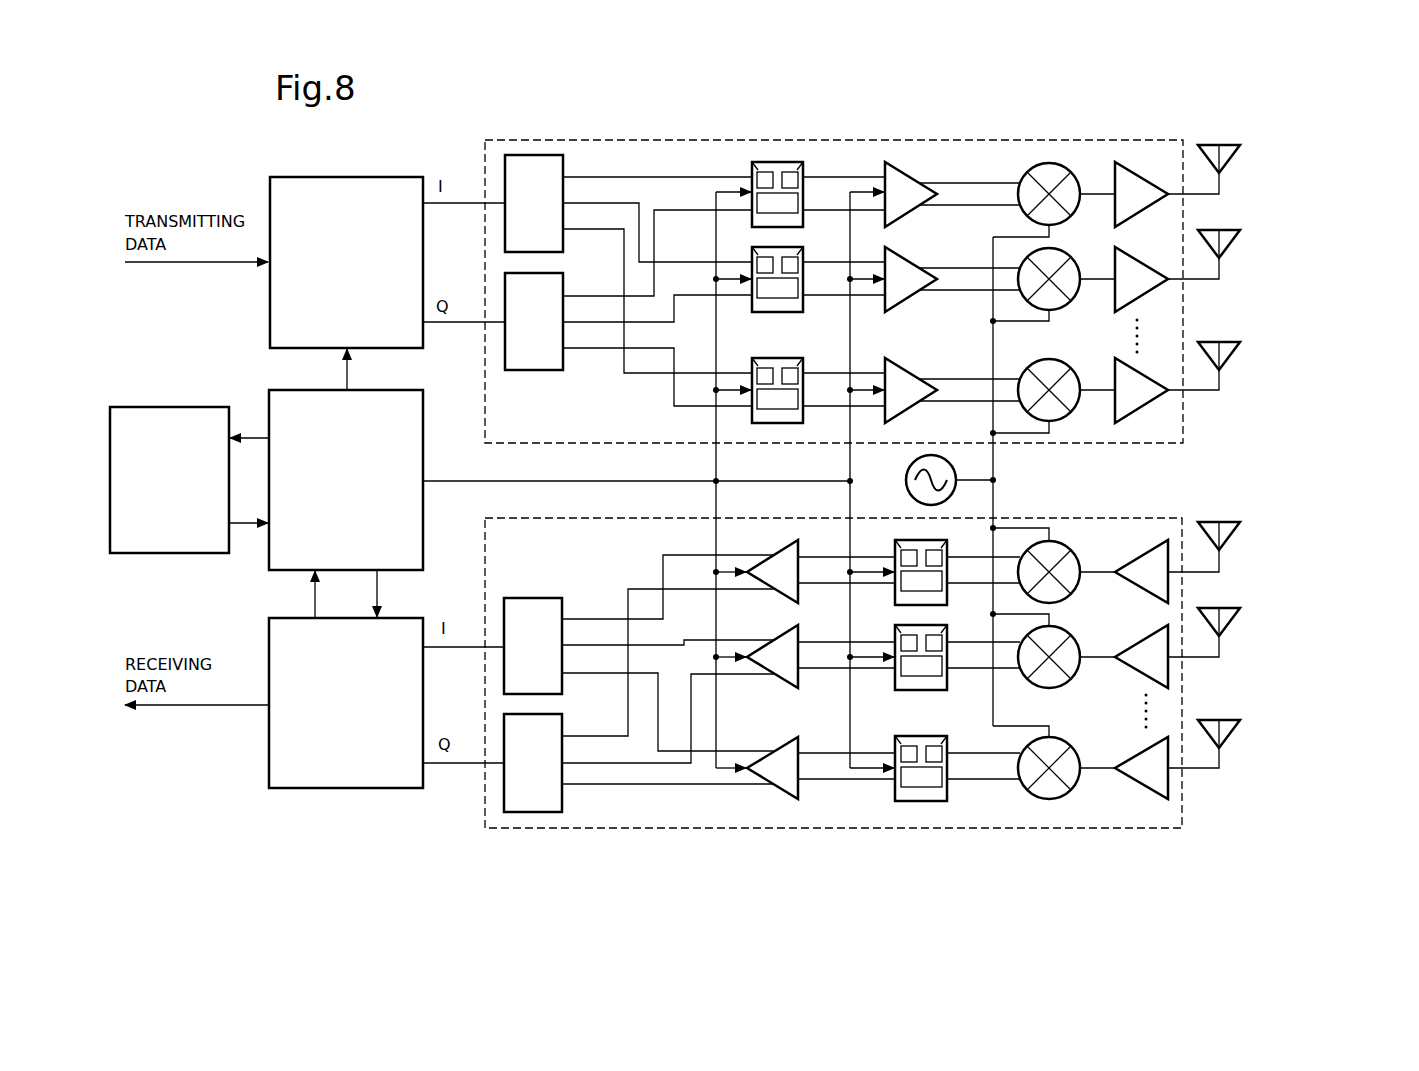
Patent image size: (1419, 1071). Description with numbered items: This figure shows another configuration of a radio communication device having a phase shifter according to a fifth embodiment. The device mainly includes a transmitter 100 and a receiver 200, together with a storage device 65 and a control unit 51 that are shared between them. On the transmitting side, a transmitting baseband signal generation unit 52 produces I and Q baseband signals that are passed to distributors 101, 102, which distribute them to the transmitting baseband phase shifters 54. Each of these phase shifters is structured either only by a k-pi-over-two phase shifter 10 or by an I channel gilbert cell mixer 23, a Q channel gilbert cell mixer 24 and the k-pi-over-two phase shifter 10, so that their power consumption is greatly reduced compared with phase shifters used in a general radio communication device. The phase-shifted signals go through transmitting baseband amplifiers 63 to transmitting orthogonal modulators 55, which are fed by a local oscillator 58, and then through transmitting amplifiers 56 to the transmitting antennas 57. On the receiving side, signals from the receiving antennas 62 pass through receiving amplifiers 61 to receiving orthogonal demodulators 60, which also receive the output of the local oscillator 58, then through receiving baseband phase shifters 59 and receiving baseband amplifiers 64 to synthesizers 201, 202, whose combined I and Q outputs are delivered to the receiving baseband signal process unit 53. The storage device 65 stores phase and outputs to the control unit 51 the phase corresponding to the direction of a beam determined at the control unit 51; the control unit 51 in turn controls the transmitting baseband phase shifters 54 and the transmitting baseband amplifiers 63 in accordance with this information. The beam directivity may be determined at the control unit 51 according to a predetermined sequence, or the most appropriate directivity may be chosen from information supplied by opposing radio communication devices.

The kπ/2 phase shifter 10 is at (803, 216).
The I channel gilbert cell mixer 23 is at (752, 170).
The Q channel gilbert cell mixer 24 is at (803, 168).
The control unit 51 is at (290, 390).
The transmitting baseband signal generation unit 52 is at (292, 177).
The receiving baseband signal process unit 53 is at (287, 792).
The transmitting baseband phase shifters 54 is at (771, 162).
The transmitting orthogonal modulators 55 is at (1038, 163).
The transmitting amplifiers 56 is at (1140, 165).
The transmitting antennas 57 is at (1242, 195).
The local oscillator 58 is at (956, 498).
The receiving baseband phase shifters 59 is at (912, 802).
The receiving orthogonal demodulators 60 is at (1062, 800).
The receiving amplifiers 61 is at (1165, 792).
The receiving antennas 62 is at (1228, 548).
The transmitting baseband amplifiers 63 is at (887, 163).
The receiving baseband amplifiers 64 is at (778, 795).
The storage device 65 is at (178, 555).
The transmitter 100 is at (1225, 428).
The distributor 101 is at (505, 158).
The distributor 102 is at (563, 352).
The receiver 200 is at (1183, 670).
The synthesizer 201 is at (595, 570).
The synthesizer 202 is at (500, 808).